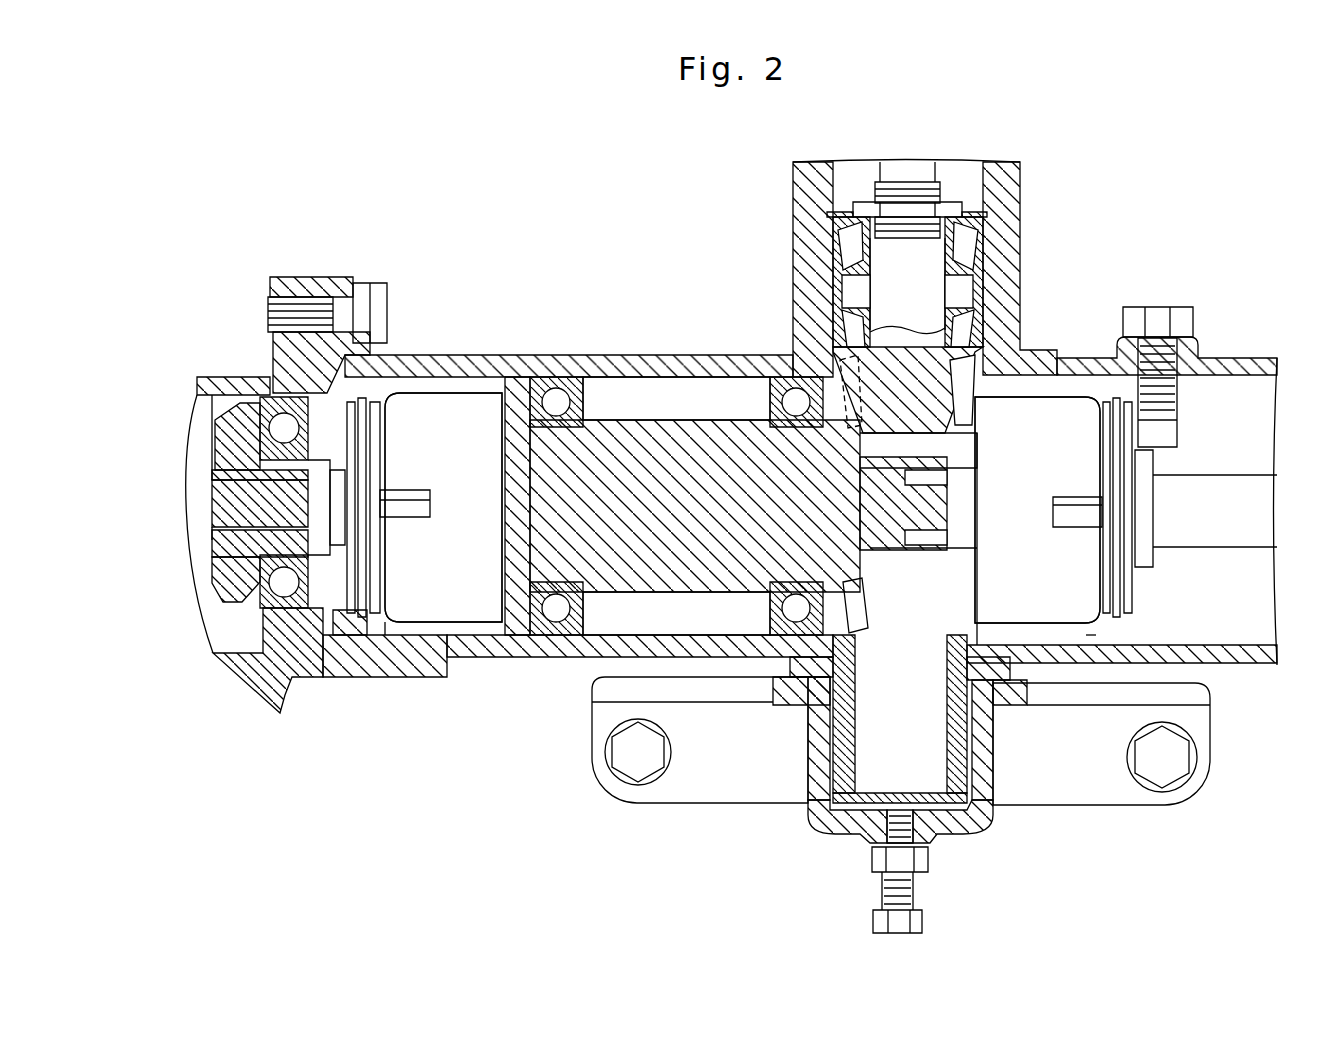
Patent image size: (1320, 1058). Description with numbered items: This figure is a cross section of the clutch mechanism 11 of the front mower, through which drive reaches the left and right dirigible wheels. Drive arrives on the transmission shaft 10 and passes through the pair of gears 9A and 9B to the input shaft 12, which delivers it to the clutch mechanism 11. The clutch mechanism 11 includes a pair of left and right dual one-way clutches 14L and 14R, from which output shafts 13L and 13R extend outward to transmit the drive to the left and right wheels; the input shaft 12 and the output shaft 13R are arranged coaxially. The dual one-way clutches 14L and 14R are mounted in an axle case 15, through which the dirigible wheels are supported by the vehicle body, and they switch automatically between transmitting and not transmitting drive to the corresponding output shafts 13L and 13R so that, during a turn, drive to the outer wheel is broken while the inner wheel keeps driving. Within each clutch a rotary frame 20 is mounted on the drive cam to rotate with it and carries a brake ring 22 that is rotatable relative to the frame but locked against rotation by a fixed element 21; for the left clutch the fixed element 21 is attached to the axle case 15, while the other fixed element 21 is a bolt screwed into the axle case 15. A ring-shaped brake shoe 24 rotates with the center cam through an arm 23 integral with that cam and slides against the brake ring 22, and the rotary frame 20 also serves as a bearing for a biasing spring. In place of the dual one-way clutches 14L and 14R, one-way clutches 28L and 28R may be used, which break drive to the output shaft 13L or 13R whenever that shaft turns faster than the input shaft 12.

The gear 9A is at (953, 405).
The gear 9B is at (870, 600).
The transmission shaft 10 is at (870, 292).
The clutch mechanism 11 is at (538, 725).
The input shaft 12 is at (609, 420).
The output shaft 13L is at (238, 502).
The output shaft 13R is at (1232, 555).
The dual one-way clutch 14L is at (437, 390).
The dual one-way clutch 14R is at (1055, 392).
The one-way clutch 28L is at (443, 507).
The one-way clutch 28R is at (1037, 510).
The axle case 15 is at (683, 355).
The rotary frame 20 is at (985, 572).
The fixed element 21 is at (317, 393).
The brake ring 22 is at (345, 625).
The arm 23 is at (415, 500).
The brake shoe 24 is at (375, 553).